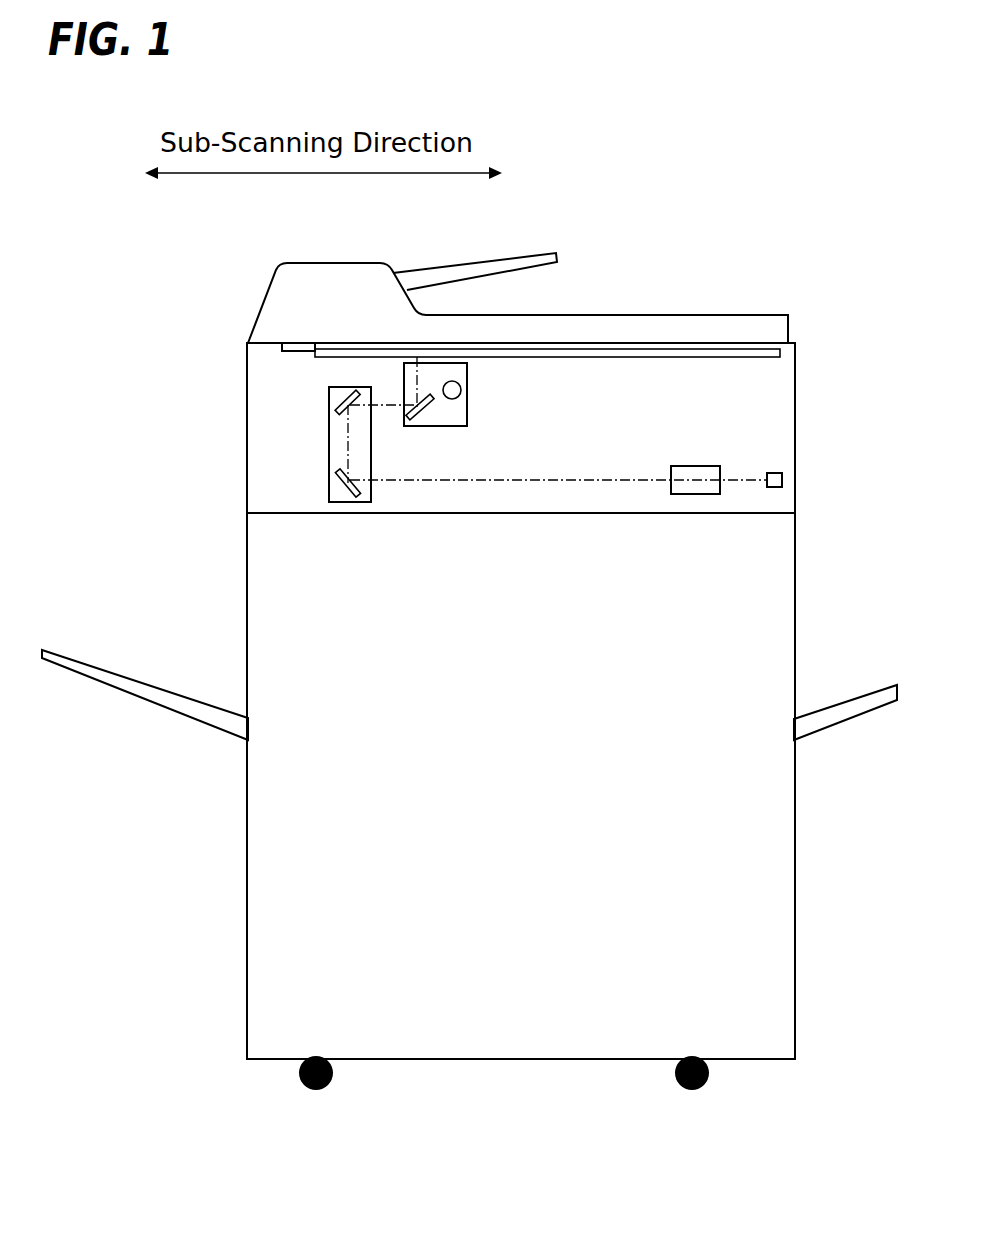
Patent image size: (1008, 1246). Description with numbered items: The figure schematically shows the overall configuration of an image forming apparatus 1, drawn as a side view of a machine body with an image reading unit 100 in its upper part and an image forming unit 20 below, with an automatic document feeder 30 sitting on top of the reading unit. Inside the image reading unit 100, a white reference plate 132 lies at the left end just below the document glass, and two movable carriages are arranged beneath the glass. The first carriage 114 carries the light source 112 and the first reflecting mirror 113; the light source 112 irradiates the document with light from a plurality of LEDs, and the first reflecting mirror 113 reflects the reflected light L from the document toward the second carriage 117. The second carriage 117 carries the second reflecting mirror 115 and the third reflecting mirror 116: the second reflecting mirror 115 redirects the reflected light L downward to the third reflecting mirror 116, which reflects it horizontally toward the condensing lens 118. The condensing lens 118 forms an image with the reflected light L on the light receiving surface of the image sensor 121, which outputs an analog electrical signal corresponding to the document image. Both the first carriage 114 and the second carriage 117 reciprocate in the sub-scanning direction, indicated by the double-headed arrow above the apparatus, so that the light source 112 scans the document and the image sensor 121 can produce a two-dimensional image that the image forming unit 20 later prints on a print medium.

The image forming apparatus 1 is at (755, 209).
The image reading unit 100 is at (795, 420).
The image forming unit 20 is at (795, 605).
The automatic document feeder 30 is at (332, 263).
The white reference plate 132 is at (302, 351).
The second carriage 117 is at (330, 438).
The second reflecting mirror 115 is at (330, 402).
The third reflecting mirror 116 is at (330, 473).
The first carriage 114 is at (467, 426).
The first reflecting mirror 113 is at (420, 420).
The light source 112 is at (463, 392).
The reflected light L is at (543, 476).
The condensing lens 118 is at (671, 470).
The image sensor 121 is at (768, 472).